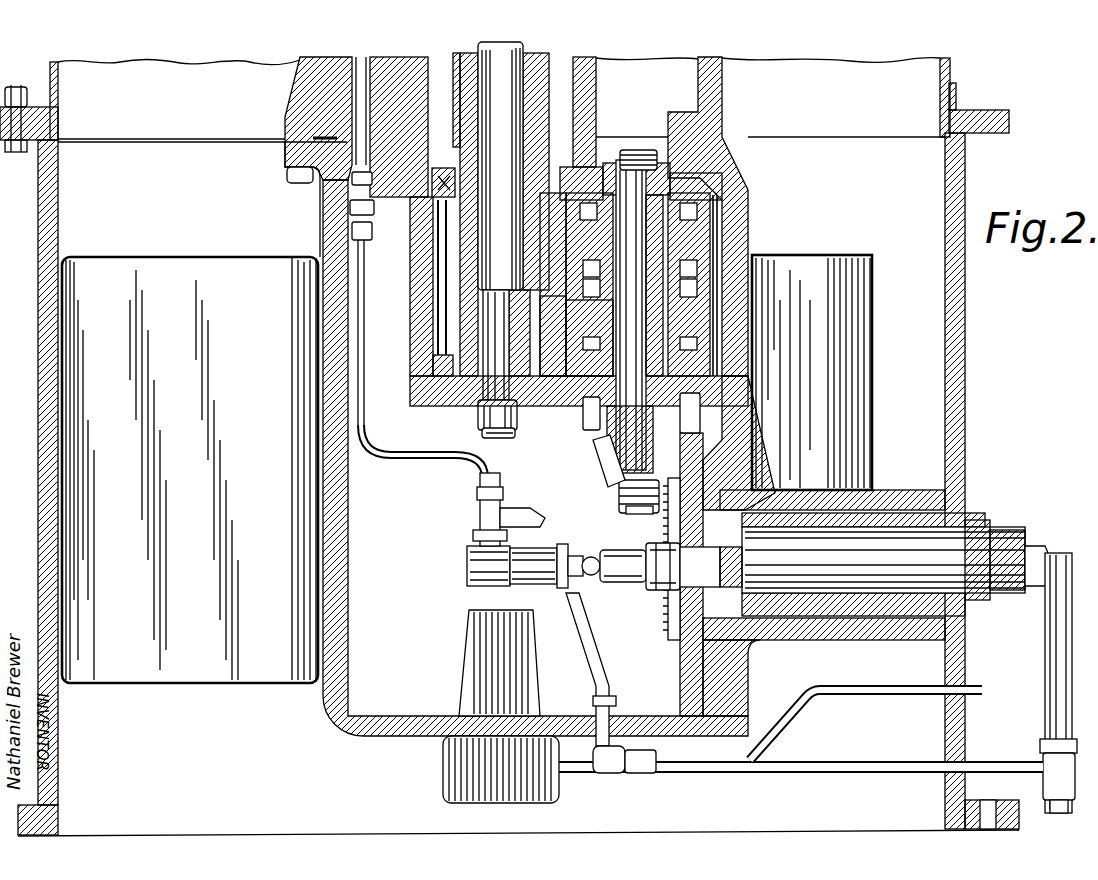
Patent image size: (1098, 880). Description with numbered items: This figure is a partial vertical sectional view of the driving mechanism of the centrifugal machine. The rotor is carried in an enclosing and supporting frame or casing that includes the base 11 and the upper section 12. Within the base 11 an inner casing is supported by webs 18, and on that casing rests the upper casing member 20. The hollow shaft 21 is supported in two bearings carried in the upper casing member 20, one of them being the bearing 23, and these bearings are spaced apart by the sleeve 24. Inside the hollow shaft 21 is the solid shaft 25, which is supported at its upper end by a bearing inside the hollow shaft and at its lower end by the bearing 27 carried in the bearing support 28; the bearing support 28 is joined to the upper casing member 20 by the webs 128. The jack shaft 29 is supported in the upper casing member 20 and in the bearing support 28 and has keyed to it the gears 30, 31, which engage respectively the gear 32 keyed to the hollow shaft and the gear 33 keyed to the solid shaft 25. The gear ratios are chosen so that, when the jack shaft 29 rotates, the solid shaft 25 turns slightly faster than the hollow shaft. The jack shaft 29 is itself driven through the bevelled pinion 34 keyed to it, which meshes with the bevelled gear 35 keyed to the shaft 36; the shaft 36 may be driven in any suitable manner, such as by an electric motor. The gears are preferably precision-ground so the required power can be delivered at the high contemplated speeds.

The base 11 is at (967, 335).
The upper section 12 is at (950, 68).
The webs 18 is at (163, 257).
The upper casing member 20 is at (302, 68).
The hollow shaft 21 is at (468, 82).
The bearing 23 is at (447, 170).
The sleeve 24 is at (427, 83).
The solid shaft 25 is at (500, 221).
The bearing 27 is at (532, 400).
The bearing support 28 is at (746, 180).
The jack shaft 29 is at (641, 332).
The gear 30 is at (638, 284).
The gear 31 is at (631, 338).
The gear 32 is at (554, 284).
The gear 33 is at (549, 336).
The bevelled pinion 34 is at (606, 458).
The bevelled gear 35 is at (666, 532).
The shaft 36 is at (1036, 546).
The webs 128 is at (420, 258).